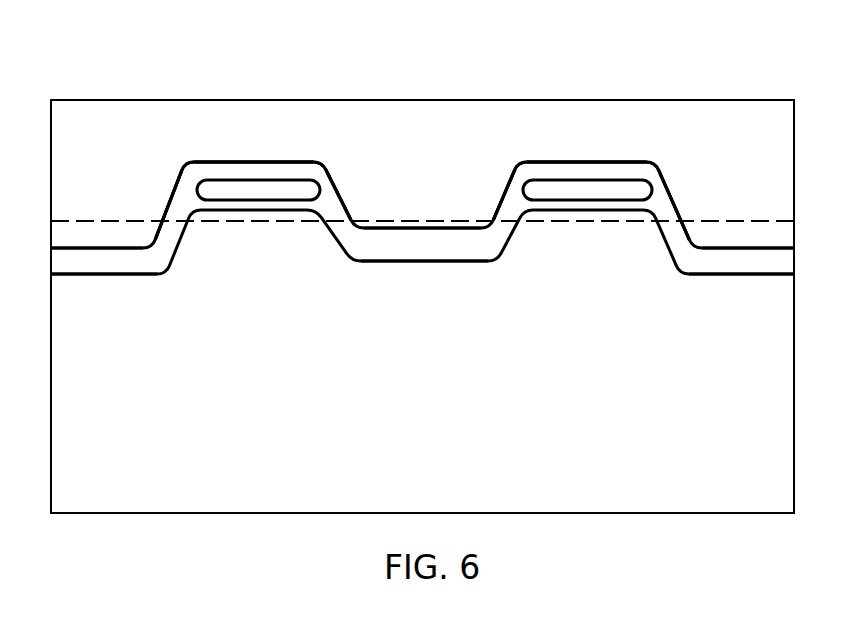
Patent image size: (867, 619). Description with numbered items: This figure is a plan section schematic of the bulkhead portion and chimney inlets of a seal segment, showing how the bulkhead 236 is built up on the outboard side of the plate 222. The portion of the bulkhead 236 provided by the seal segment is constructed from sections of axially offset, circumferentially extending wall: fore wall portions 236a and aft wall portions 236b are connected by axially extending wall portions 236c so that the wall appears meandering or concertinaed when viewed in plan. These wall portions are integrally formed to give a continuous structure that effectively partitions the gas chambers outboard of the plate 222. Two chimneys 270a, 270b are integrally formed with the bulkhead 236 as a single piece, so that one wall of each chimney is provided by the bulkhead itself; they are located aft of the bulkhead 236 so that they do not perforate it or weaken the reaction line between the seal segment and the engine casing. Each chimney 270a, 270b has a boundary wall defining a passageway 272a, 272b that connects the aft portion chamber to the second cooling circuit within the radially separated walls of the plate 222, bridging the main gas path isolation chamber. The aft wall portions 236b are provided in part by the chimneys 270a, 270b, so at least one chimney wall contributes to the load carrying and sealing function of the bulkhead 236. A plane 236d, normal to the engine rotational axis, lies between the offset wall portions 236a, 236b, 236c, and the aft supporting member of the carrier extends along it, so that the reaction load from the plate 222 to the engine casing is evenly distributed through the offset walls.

The plate 222 is at (537, 92).
The bulkhead 236 is at (75, 285).
The fore wall portions 236a is at (133, 263).
The aft wall portions 236b is at (203, 173).
The axially extending wall portions 236c is at (333, 238).
The plane 236d is at (747, 193).
The chimney 270a is at (673, 172).
The chimney 270b is at (341, 170).
The passageway 272a is at (580, 190).
The passageway 272b is at (255, 187).